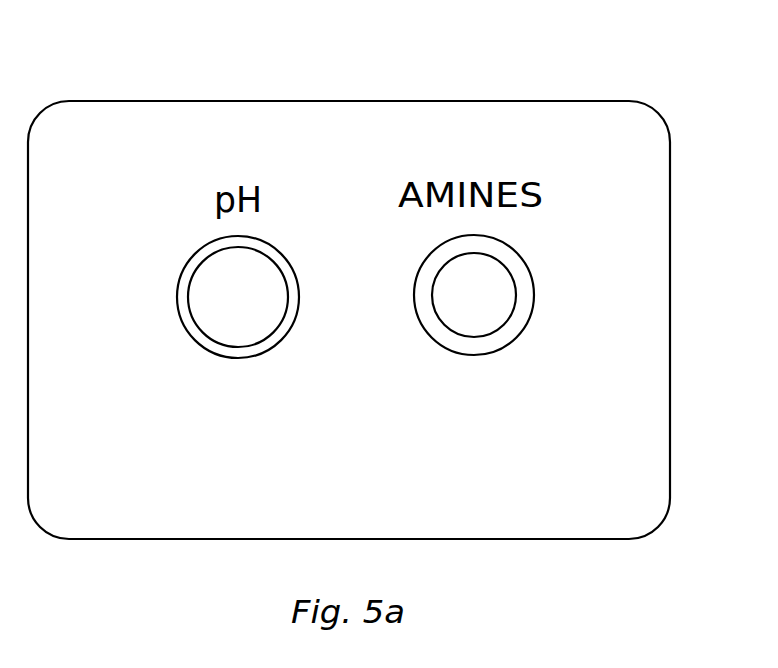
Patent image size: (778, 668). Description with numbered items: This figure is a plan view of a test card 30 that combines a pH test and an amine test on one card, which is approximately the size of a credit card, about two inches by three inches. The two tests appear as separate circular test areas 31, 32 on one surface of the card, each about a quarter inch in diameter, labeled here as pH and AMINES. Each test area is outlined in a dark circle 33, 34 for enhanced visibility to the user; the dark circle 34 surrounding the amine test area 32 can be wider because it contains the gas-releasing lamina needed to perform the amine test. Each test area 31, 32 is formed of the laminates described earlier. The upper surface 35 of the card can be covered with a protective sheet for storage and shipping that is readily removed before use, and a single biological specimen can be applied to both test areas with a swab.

The test card 30 is at (562, 75).
The pH test area 31 is at (208, 283).
The amine test area 32 is at (447, 285).
The dark circle 33 is at (248, 322).
The dark circle 34 is at (520, 278).
The upper surface 35 is at (517, 490).